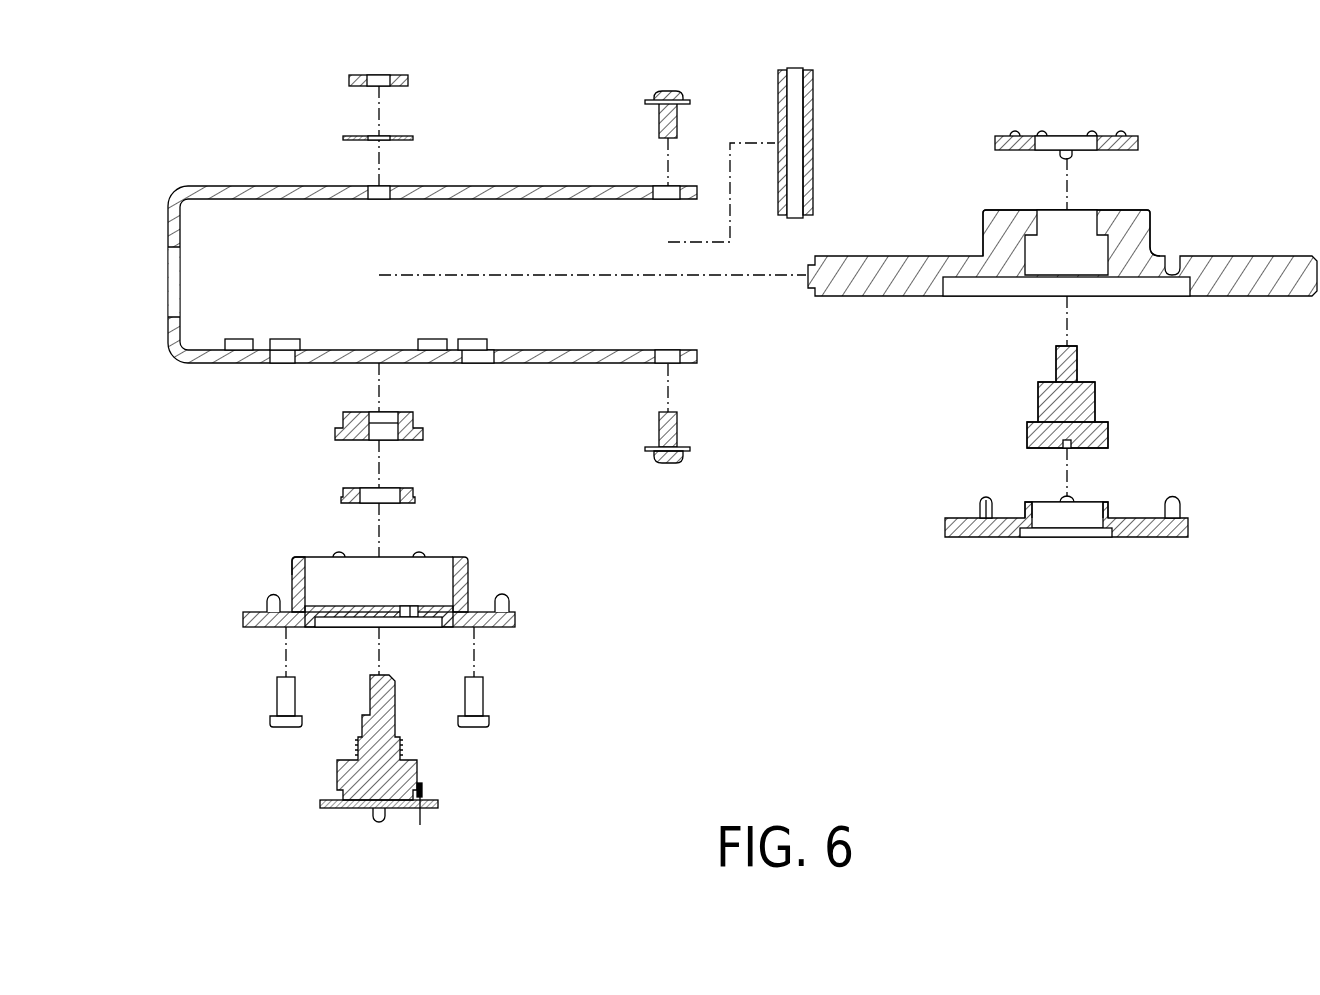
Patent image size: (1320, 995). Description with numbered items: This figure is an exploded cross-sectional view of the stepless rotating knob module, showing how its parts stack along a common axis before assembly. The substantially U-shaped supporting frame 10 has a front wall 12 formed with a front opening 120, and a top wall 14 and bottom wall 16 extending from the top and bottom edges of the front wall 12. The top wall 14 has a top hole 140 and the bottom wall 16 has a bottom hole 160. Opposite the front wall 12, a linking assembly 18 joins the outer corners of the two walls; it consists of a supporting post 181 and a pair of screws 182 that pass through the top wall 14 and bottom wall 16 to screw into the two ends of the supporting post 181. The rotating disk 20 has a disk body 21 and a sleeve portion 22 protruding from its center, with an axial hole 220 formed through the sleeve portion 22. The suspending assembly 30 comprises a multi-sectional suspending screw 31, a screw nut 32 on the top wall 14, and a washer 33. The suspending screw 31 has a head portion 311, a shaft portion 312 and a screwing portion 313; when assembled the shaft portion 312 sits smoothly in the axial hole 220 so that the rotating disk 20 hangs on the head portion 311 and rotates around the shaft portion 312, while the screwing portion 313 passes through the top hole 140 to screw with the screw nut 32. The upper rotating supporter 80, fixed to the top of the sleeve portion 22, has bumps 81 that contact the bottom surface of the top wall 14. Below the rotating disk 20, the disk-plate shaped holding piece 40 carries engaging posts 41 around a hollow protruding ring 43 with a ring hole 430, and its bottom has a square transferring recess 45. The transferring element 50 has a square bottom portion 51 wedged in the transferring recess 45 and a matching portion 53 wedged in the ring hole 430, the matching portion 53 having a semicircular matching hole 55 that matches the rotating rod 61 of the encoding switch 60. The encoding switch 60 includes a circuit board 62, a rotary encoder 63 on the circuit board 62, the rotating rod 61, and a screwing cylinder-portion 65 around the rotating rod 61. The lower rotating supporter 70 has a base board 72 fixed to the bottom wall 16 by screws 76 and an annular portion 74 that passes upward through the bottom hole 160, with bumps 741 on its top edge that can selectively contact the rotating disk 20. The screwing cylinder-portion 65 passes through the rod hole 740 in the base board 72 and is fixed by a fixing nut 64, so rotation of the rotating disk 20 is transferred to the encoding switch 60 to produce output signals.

The supporting frame 10 is at (393, 273).
The front wall 12 is at (139, 274).
The front opening 120 is at (172, 285).
The top wall 14 is at (442, 197).
The top hole 140 is at (374, 200).
The bottom wall 16 is at (442, 367).
The bottom hole 160 is at (334, 350).
The linking assembly 18 is at (770, 246).
The supporting post 181 is at (813, 128).
The screws 182 is at (677, 118).
The rotating disk 20 is at (1062, 223).
The disk body 21 is at (1208, 256).
The sleeve portion 22 is at (1061, 215).
The axial hole 220 is at (1053, 218).
The suspending assembly 30 is at (766, 260).
The suspending screw 31 is at (1060, 394).
The head portion 311 is at (1098, 435).
The shaft portion 312 is at (1087, 400).
The screwing portion 313 is at (1068, 355).
The screw nut 32 is at (408, 80).
The washer 33 is at (413, 138).
The holding piece 40 is at (1067, 522).
The engaging posts 41 is at (985, 497).
The protruding ring 43 is at (1028, 508).
The ring hole 430 is at (1082, 508).
The transferring recess 45 is at (1028, 538).
The transferring element 50 is at (395, 412).
The bottom portion 51 is at (338, 432).
The matching portion 53 is at (352, 414).
The matching hole 55 is at (387, 413).
The encoding switch 60 is at (398, 656).
The rotating rod 61 is at (392, 704).
The circuit board 62 is at (320, 804).
The rotary encoder 63 is at (417, 772).
The fixing nut 64 is at (413, 490).
The screwing cylinder-portion 65 is at (358, 746).
The lower rotating supporter 70 is at (399, 611).
The base board 72 is at (243, 620).
The annular portion 74 is at (345, 592).
The rod hole 740 is at (360, 628).
The bumps 741 is at (299, 558).
The screws 76 is at (282, 690).
The upper rotating supporter 80 is at (1042, 117).
The bumps 81 is at (1118, 136).